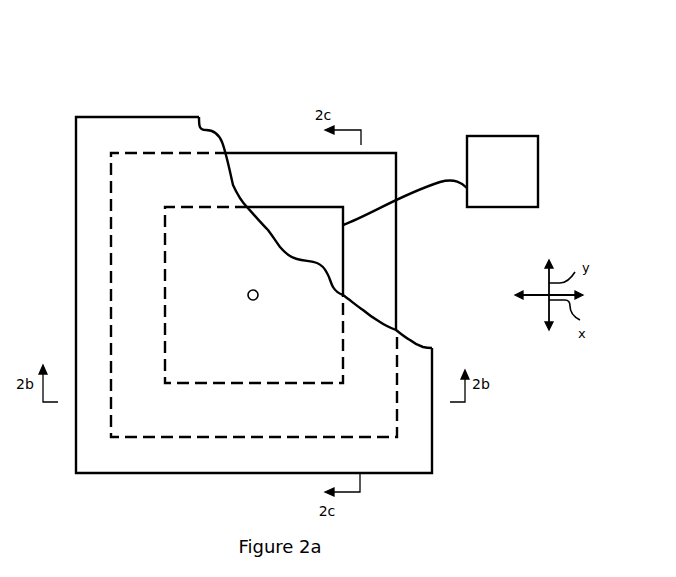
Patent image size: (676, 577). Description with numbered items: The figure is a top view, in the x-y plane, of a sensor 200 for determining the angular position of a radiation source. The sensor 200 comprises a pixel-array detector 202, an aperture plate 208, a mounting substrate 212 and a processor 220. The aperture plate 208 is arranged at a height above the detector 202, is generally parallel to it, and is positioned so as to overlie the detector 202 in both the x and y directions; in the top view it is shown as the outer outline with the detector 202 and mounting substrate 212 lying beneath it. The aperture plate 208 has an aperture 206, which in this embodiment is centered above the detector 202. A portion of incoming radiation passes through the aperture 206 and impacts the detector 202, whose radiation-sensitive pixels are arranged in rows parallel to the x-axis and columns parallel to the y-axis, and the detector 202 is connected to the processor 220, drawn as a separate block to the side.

The sensor 200 is at (383, 98).
The pixel-array detector 202 is at (300, 225).
The aperture 206 is at (247, 293).
The aperture plate 208 is at (96, 150).
The mounting substrate 212 is at (257, 170).
The processor 220 is at (440, 180).